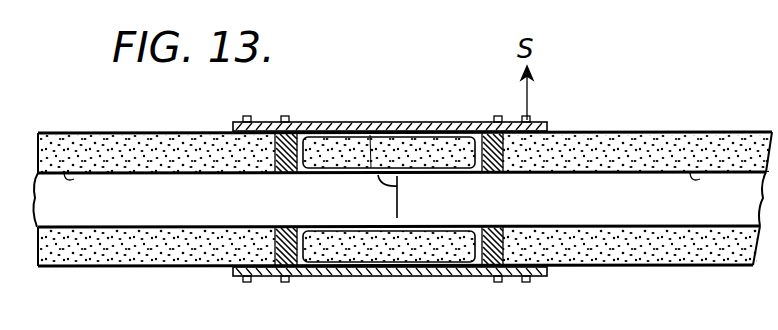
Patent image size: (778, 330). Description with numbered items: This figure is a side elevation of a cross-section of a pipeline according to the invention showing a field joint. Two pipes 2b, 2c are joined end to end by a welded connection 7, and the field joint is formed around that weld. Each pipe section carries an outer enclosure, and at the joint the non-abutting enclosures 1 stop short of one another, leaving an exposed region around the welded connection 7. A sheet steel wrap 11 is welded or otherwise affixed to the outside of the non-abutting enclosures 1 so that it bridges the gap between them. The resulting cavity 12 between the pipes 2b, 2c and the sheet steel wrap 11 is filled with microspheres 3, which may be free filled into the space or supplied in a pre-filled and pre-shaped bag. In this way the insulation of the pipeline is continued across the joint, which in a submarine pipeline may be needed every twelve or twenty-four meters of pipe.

The non-abutting enclosures 1 is at (140, 132).
The pipe 2b is at (66, 150).
The pipe 2c is at (696, 150).
The microspheres 3 is at (318, 278).
The welded connection 7 is at (369, 123).
The sheet steel wrap 11 is at (385, 276).
The cavity 12 is at (471, 128).